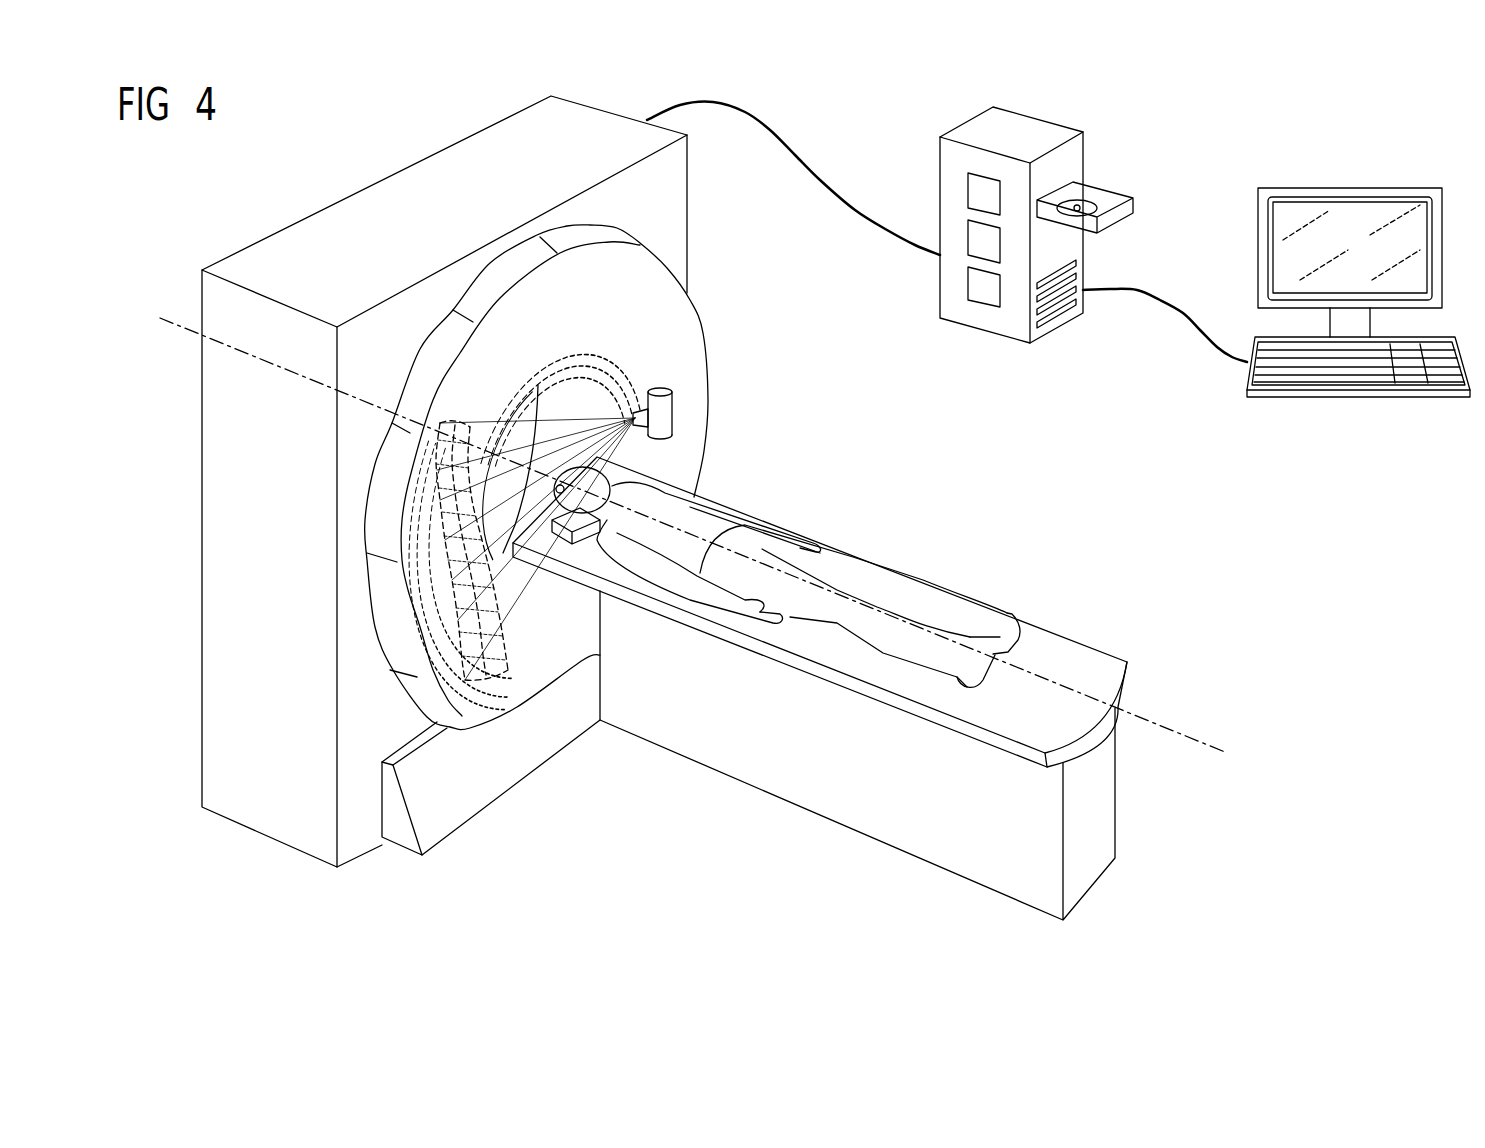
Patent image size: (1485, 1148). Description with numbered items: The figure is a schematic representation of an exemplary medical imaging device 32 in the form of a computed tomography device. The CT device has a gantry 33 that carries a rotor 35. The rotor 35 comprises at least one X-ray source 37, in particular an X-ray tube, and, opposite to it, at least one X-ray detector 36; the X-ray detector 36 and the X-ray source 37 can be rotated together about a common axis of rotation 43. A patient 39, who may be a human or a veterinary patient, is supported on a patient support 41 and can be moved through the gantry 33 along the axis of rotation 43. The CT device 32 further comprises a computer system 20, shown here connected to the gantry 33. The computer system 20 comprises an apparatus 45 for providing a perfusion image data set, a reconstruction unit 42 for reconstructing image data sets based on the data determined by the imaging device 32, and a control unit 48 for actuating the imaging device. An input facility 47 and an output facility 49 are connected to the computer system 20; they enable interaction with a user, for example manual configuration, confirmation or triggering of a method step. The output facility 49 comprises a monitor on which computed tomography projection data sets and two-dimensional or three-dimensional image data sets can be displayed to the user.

The computer system 20 is at (1012, 211).
The medical imaging device 32 is at (393, 481).
The gantry 33 is at (283, 229).
The rotor 35 is at (684, 331).
The X-ray detector 36 is at (467, 647).
The X-ray source 37 is at (675, 414).
The patient 39 is at (877, 588).
The patient support 41 is at (923, 840).
The reconstruction unit 42 is at (977, 230).
The axis of rotation 43 is at (190, 328).
The apparatus for providing a perfusion image data set 45 is at (977, 188).
The input facility 47 is at (1247, 378).
The control unit 48 is at (977, 280).
The output facility 49 is at (1265, 253).